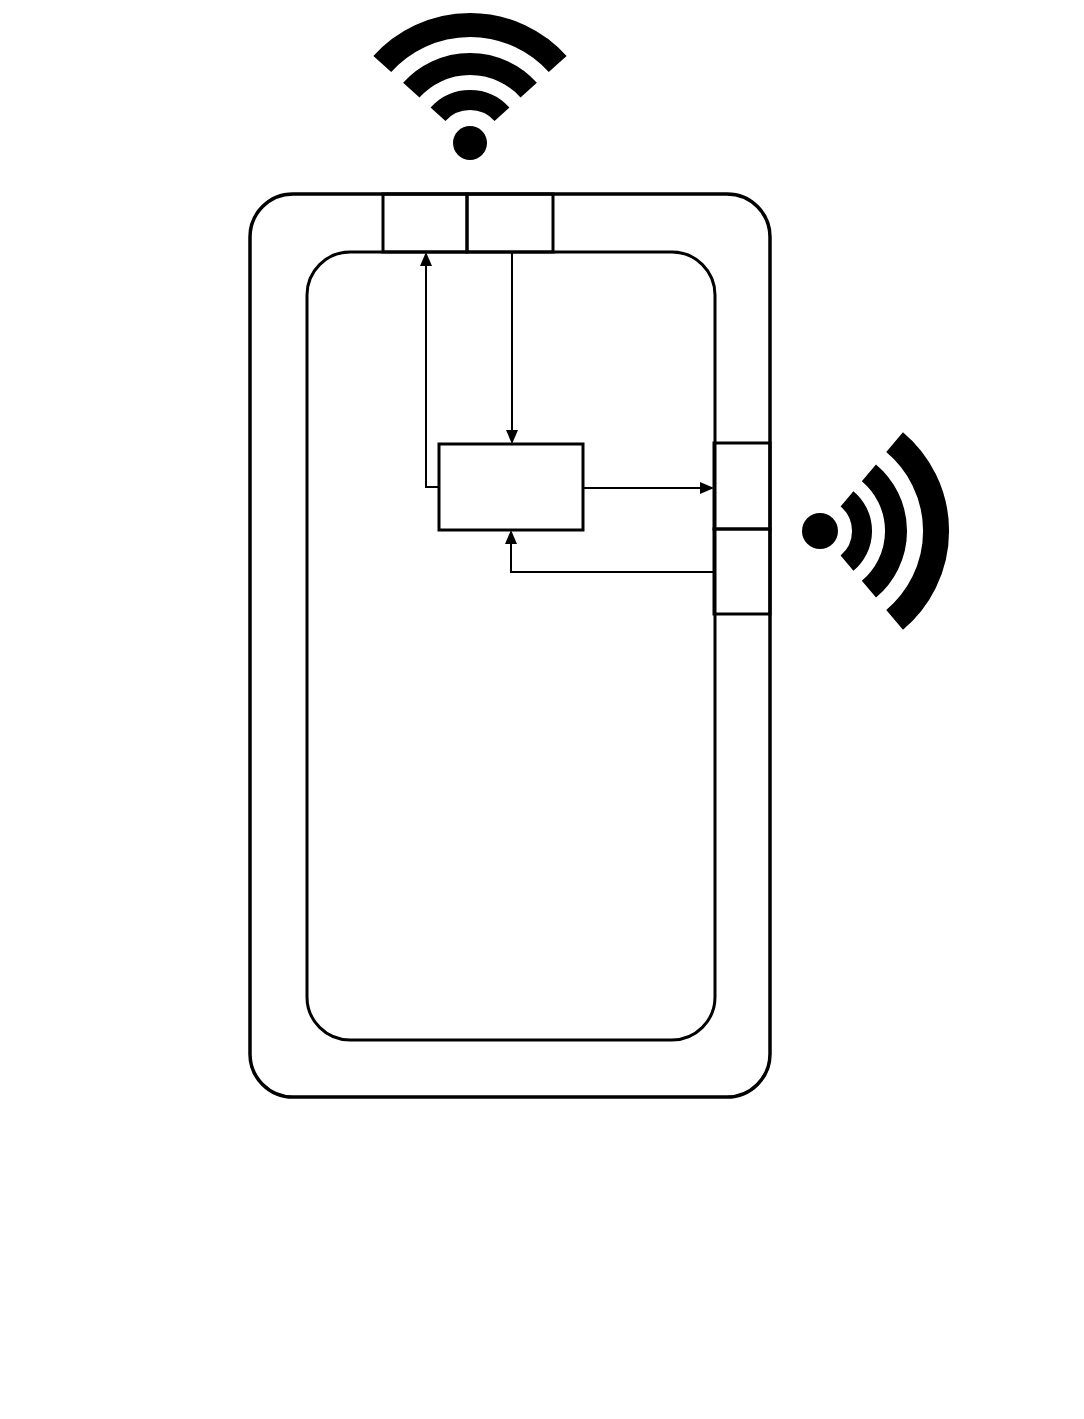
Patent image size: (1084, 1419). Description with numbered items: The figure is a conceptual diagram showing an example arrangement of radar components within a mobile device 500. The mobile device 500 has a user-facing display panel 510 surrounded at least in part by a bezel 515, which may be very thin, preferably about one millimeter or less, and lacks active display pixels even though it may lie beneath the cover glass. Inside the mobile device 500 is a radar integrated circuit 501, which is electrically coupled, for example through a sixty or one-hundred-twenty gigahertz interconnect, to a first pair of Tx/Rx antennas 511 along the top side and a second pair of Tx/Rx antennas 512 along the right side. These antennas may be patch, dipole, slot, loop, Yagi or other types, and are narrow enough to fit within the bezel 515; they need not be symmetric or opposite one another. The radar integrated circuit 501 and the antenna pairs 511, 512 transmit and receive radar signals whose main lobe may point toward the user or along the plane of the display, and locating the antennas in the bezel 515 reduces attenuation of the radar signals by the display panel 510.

The mobile device 500 is at (950, 31).
The radar integrated circuit 501 is at (529, 516).
The display panel 510 is at (530, 667).
The first pair of Tx/Rx antennas 511 is at (530, 193).
The second pair of Tx/Rx antennas 512 is at (772, 597).
The bezel 515 is at (250, 307).